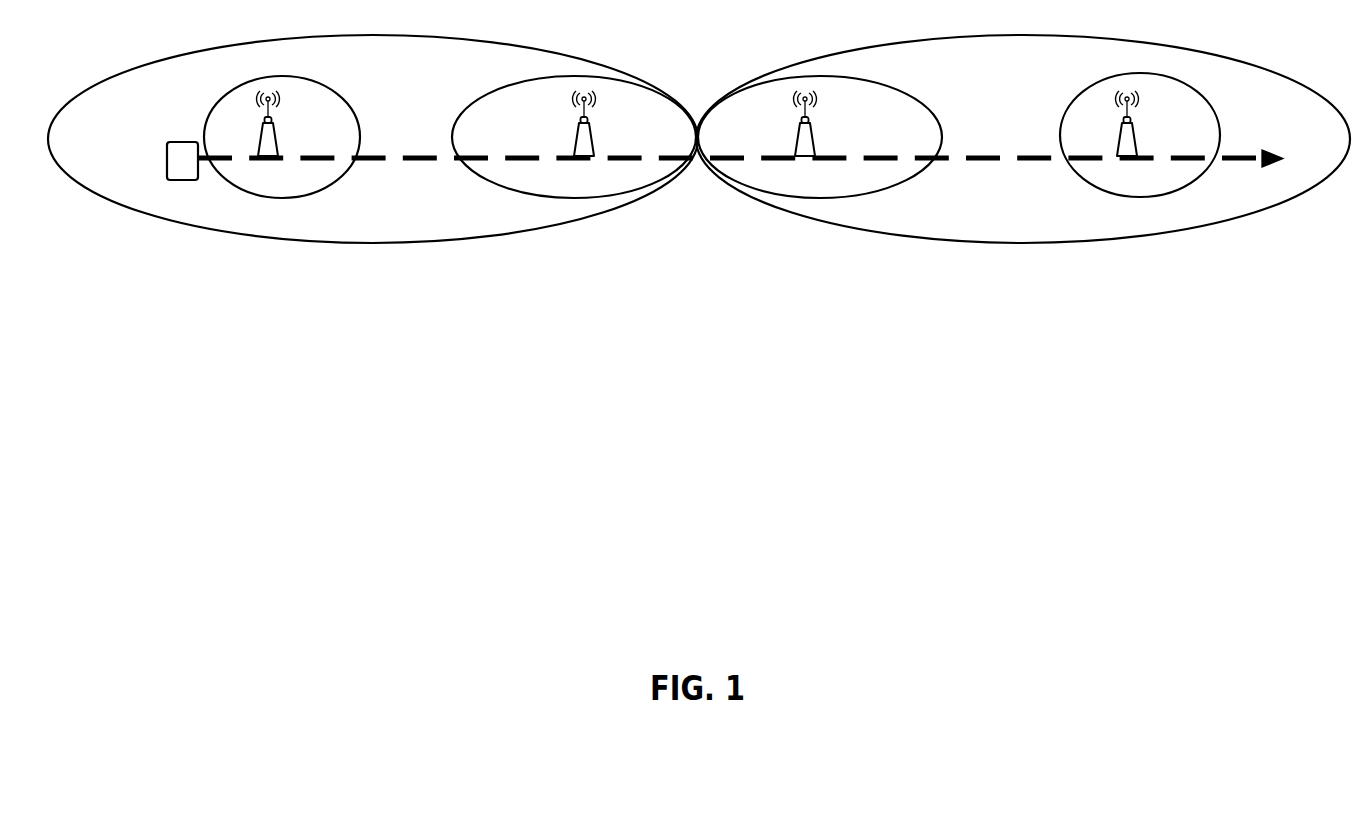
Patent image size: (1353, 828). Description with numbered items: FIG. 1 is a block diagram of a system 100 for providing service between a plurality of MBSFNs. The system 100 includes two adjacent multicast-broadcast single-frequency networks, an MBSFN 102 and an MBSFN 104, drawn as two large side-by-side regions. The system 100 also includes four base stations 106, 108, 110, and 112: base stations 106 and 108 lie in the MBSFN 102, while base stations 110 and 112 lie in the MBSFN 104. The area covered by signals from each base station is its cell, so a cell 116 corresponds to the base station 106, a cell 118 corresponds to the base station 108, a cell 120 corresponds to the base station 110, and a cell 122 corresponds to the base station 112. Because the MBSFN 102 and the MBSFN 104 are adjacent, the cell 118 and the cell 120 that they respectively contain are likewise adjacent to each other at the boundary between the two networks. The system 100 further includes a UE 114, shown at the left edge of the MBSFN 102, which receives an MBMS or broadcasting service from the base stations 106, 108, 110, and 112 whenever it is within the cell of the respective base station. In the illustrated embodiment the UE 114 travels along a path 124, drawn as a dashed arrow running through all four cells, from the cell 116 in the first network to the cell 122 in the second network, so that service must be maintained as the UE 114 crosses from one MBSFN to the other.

The system 100 is at (717, 355).
The MBSFN 102 is at (185, 227).
The MBSFN 104 is at (830, 222).
The base station 106 is at (279, 135).
The base station 108 is at (594, 129).
The base station 110 is at (816, 126).
The base station 112 is at (1138, 126).
The UE 114 is at (181, 142).
The cell 116 is at (347, 96).
The cell 118 is at (520, 80).
The cell 120 is at (923, 92).
The cell 122 is at (1205, 92).
The path 124 is at (407, 162).